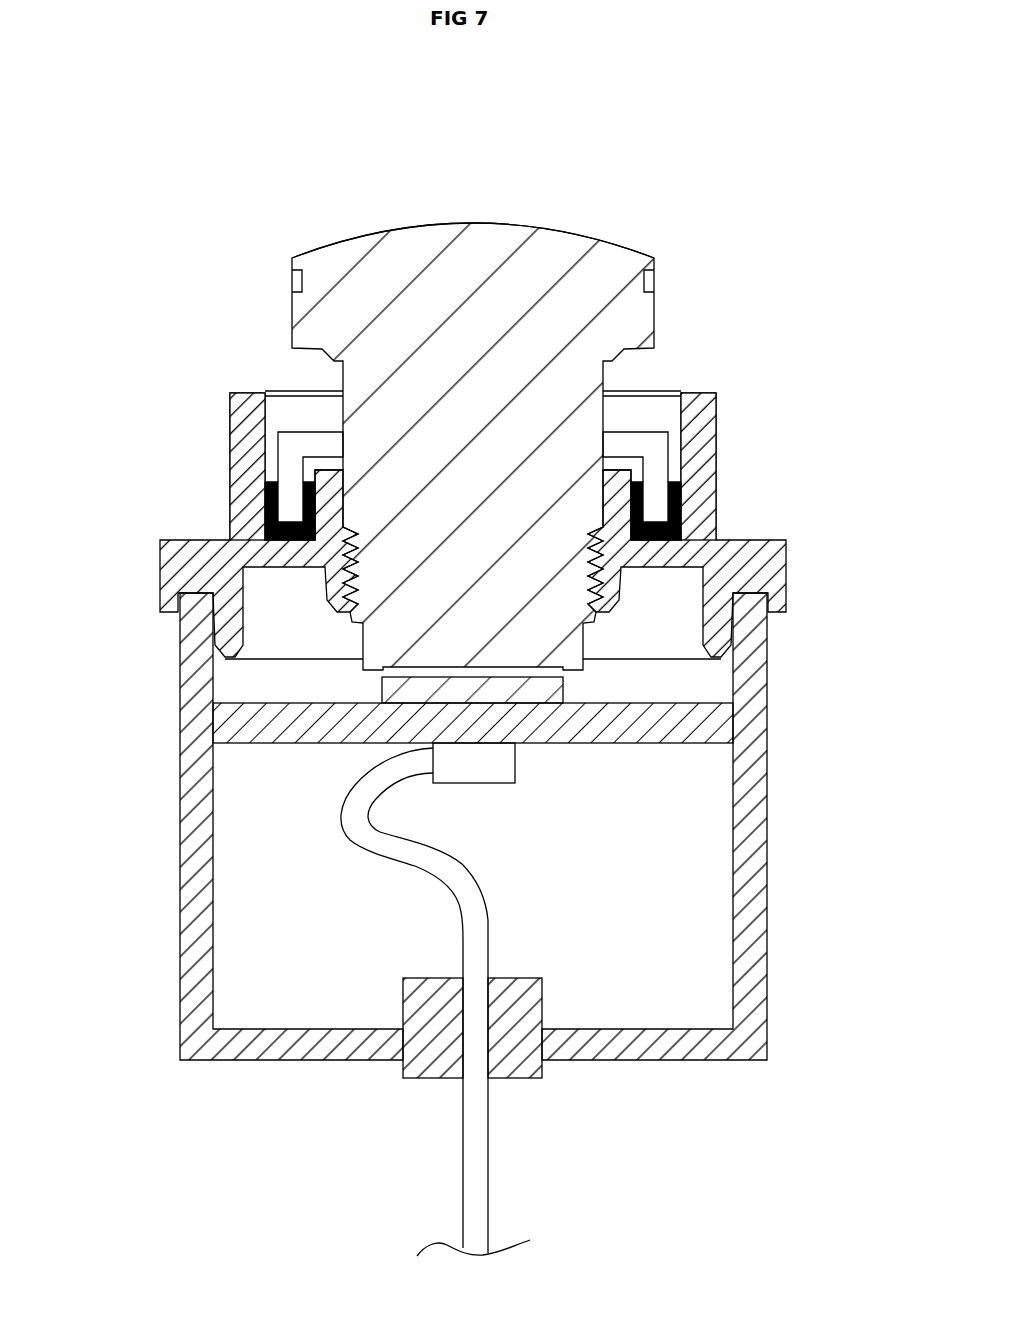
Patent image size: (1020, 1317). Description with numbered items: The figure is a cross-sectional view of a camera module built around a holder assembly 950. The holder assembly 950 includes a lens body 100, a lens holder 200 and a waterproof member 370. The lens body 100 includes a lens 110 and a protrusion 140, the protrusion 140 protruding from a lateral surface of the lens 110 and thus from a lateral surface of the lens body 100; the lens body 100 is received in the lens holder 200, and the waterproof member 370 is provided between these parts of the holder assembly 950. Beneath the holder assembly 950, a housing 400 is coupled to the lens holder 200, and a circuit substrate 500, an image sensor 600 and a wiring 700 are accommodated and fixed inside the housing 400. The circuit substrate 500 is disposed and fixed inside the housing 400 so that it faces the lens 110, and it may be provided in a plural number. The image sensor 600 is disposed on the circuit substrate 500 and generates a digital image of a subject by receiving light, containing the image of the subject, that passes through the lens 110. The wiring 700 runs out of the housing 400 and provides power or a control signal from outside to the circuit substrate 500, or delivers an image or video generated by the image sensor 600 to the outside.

The lens body 100 is at (500, 223).
The lens 110 is at (403, 270).
The protrusion 140 is at (645, 428).
The lens holder 200 is at (220, 513).
The waterproof member 370 is at (677, 523).
The housing 400 is at (195, 824).
The circuit substrate 500 is at (683, 720).
The image sensor 600 is at (500, 688).
The wiring 700 is at (477, 1165).
The holder assembly 950 is at (677, 194).